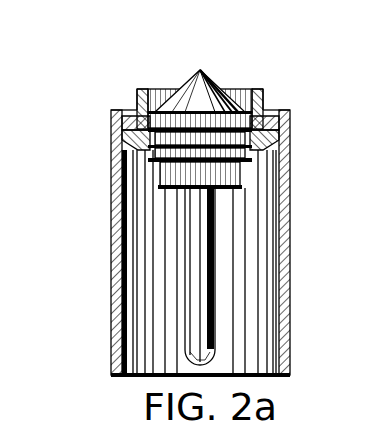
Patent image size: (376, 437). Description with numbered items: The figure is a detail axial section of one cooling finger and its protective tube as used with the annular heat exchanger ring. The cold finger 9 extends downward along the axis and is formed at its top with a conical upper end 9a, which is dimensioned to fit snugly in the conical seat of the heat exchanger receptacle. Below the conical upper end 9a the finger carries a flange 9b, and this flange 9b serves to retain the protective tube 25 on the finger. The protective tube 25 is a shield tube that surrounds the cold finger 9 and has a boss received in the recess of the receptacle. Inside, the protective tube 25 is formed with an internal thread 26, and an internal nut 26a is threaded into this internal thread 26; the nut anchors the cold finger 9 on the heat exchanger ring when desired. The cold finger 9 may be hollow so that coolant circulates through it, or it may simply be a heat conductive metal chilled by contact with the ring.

The protective tube 25 is at (290, 248).
The internal thread 26 is at (289, 112).
The internal nut 26a is at (112, 130).
The cold finger 9 is at (210, 325).
The conical upper end 9a is at (213, 84).
The flange 9b is at (112, 200).